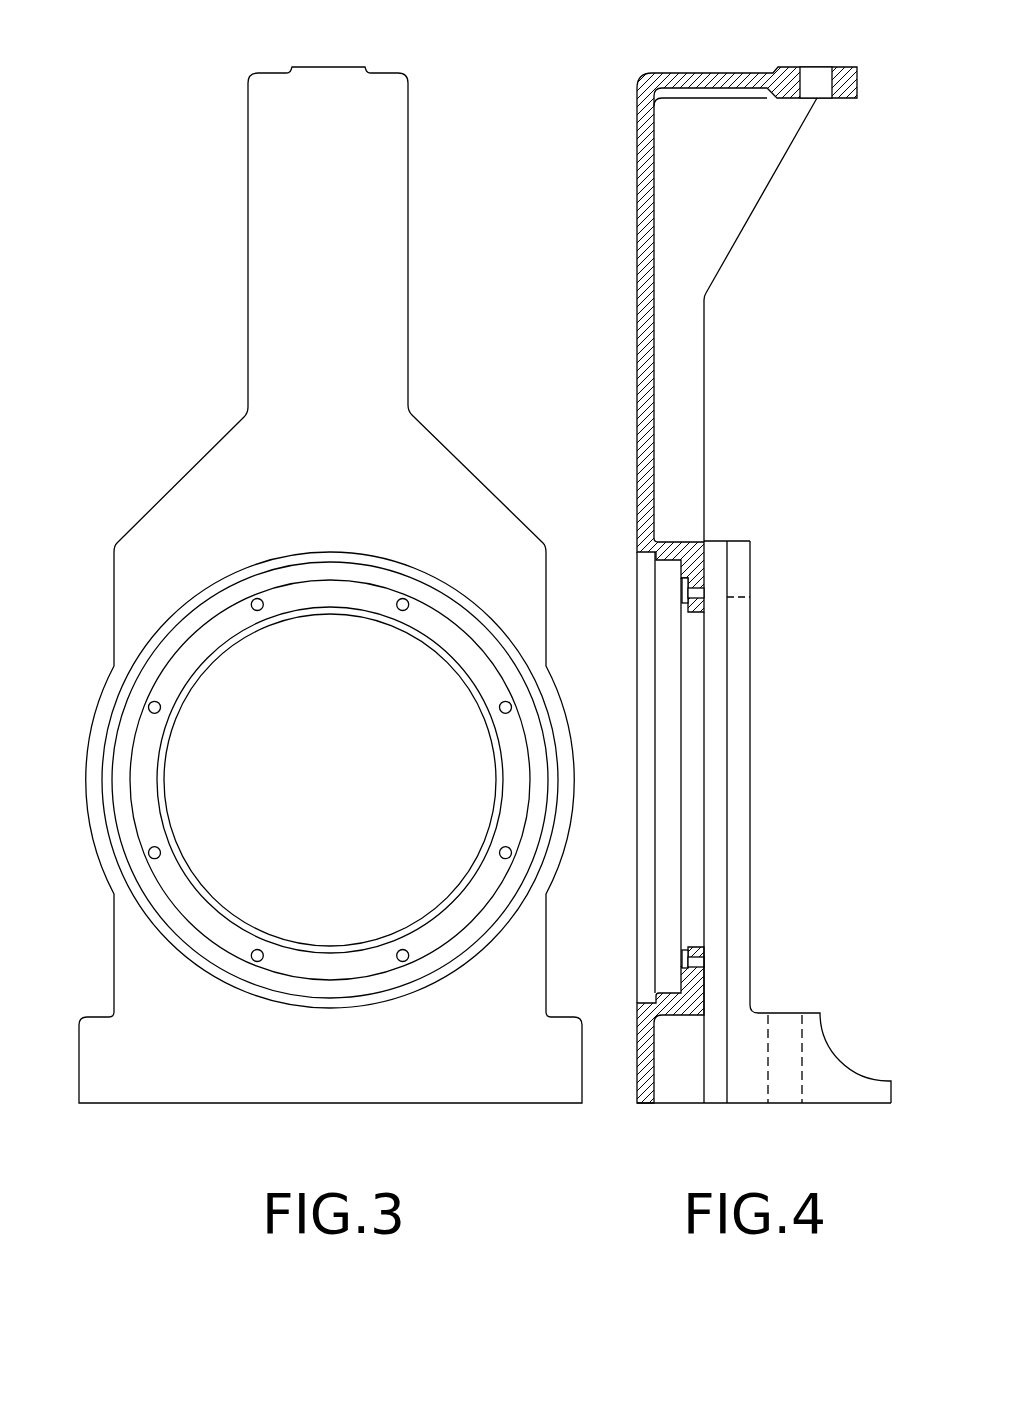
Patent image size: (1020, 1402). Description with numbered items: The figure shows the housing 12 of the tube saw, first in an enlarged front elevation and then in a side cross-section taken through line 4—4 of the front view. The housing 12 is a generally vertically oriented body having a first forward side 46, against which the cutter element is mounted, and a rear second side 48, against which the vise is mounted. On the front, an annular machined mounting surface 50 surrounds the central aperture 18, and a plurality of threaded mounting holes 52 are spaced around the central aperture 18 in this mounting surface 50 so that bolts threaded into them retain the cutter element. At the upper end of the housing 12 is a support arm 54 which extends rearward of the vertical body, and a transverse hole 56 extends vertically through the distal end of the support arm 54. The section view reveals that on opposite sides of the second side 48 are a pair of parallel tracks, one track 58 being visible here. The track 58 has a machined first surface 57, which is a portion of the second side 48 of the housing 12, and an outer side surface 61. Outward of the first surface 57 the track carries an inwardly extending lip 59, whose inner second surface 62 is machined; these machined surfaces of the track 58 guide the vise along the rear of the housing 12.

In FIG. 3, the section line 4— 4 is at (270, 1158).
In FIG. 3, the housing 12 is at (216, 440).
In FIG. 4, the housing 12 is at (632, 150).
In FIG. 3, the central aperture 18 is at (250, 922).
In FIG. 4, the central aperture 18 is at (682, 612).
In FIG. 3, the first forward side 46 is at (248, 170).
In FIG. 4, the first forward side 46 is at (635, 360).
In FIG. 4, the rear second side 48 is at (654, 298).
In FIG. 3, the annular machined mounting surface 50 is at (178, 657).
In FIG. 4, the annular machined mounting surface 50 is at (682, 968).
In FIG. 3, the threaded mounting holes 52 is at (150, 705).
In FIG. 4, the support arm 54 is at (690, 70).
In FIG. 4, the transverse hole 56 is at (815, 97).
In FIG. 4, the machined first surface 57 is at (705, 727).
In FIG. 4, the track 58 is at (722, 538).
In FIG. 4, the inwardly extending lip 59 is at (745, 693).
In FIG. 4, the outer side surface 61 is at (720, 910).
In FIG. 4, the inner second surface 62 is at (704, 567).